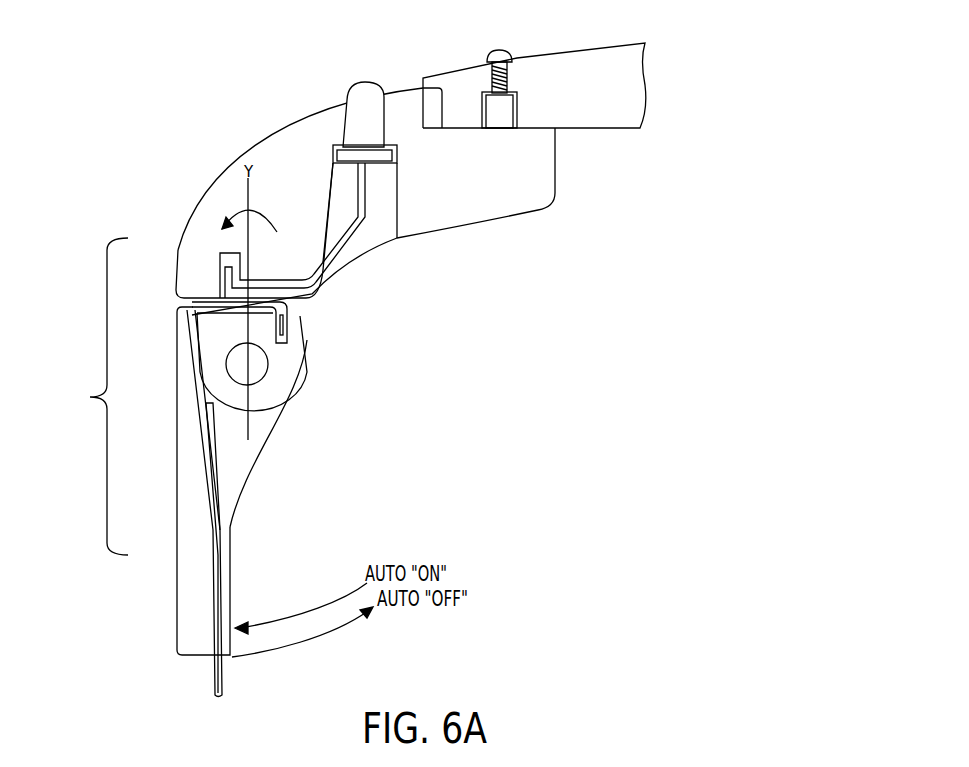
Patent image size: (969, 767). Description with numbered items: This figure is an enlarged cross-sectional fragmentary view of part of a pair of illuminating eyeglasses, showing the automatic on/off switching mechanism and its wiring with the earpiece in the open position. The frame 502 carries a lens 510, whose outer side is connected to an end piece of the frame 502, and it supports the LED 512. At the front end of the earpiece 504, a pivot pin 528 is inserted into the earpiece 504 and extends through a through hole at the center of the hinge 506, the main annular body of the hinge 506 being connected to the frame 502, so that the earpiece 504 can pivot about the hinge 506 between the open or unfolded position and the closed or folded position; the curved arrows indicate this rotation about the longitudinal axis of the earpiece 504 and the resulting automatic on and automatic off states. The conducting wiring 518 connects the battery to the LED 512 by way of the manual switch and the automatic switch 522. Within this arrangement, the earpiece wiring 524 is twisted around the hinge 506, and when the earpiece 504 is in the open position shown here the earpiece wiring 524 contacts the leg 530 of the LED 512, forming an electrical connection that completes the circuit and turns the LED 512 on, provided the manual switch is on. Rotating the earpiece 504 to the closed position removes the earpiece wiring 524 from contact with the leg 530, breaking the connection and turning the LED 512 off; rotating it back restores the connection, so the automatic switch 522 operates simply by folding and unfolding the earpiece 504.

The frame 502 is at (283, 157).
The earpiece 504 is at (188, 612).
The hinge 506 is at (275, 383).
The lens 510 is at (595, 55).
The LED 512 is at (365, 88).
The conducting wiring 518 is at (90, 397).
The automatic switch 522 is at (300, 308).
The earpiece wiring 524 is at (207, 505).
The pivot pin 528 is at (255, 372).
The leg of LED 530 is at (227, 287).